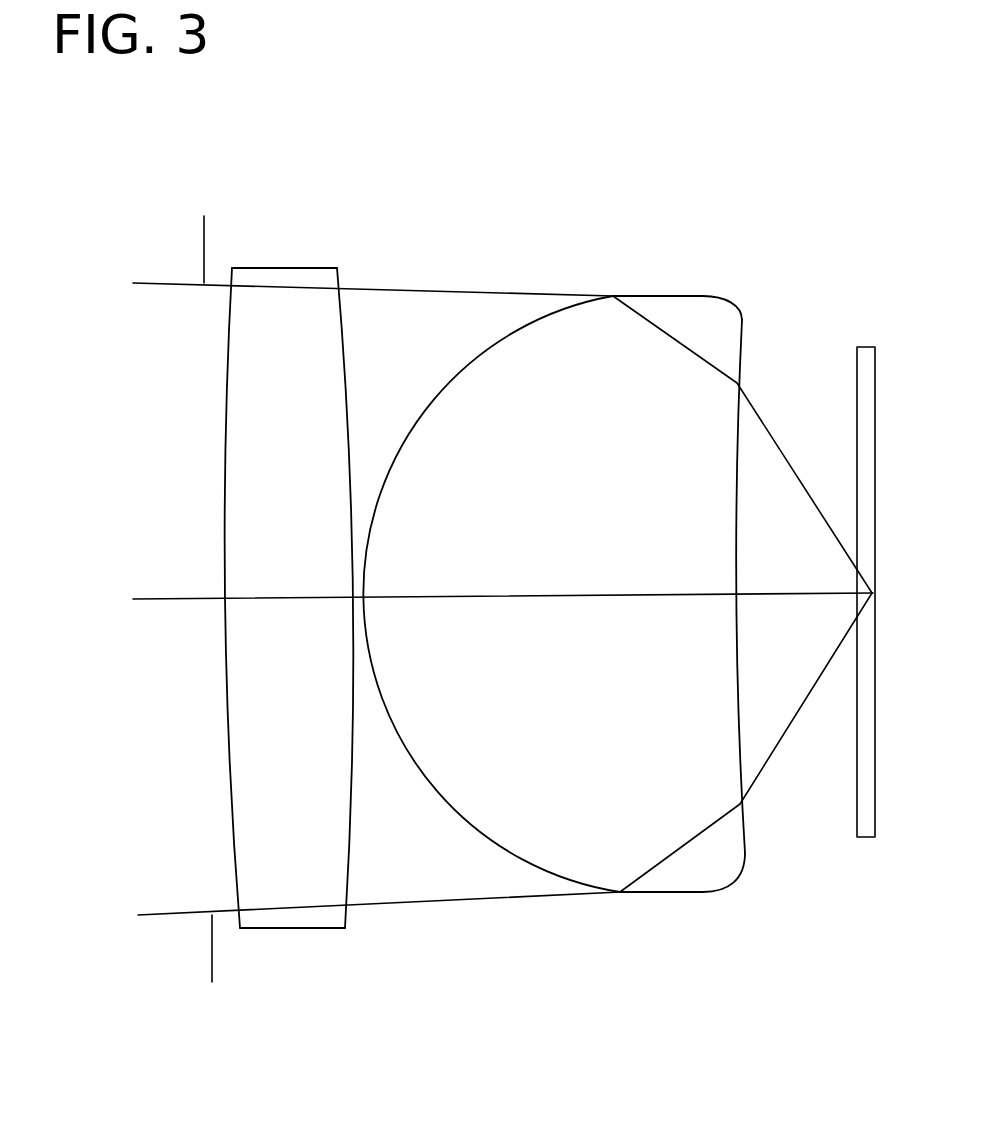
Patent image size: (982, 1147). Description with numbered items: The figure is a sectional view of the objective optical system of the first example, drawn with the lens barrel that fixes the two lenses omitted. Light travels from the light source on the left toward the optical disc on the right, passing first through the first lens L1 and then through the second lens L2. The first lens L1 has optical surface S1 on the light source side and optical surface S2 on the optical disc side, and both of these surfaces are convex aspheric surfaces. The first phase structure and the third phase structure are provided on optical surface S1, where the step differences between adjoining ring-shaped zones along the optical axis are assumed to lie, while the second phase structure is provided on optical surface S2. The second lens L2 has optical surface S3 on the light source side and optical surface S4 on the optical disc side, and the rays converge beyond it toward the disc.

The first lens L1 is at (282, 583).
The second lens L2 is at (575, 595).
The optical surface S1 is at (225, 863).
The optical surface S2 is at (360, 857).
The optical surface S3 is at (503, 865).
The optical surface S4 is at (762, 850).